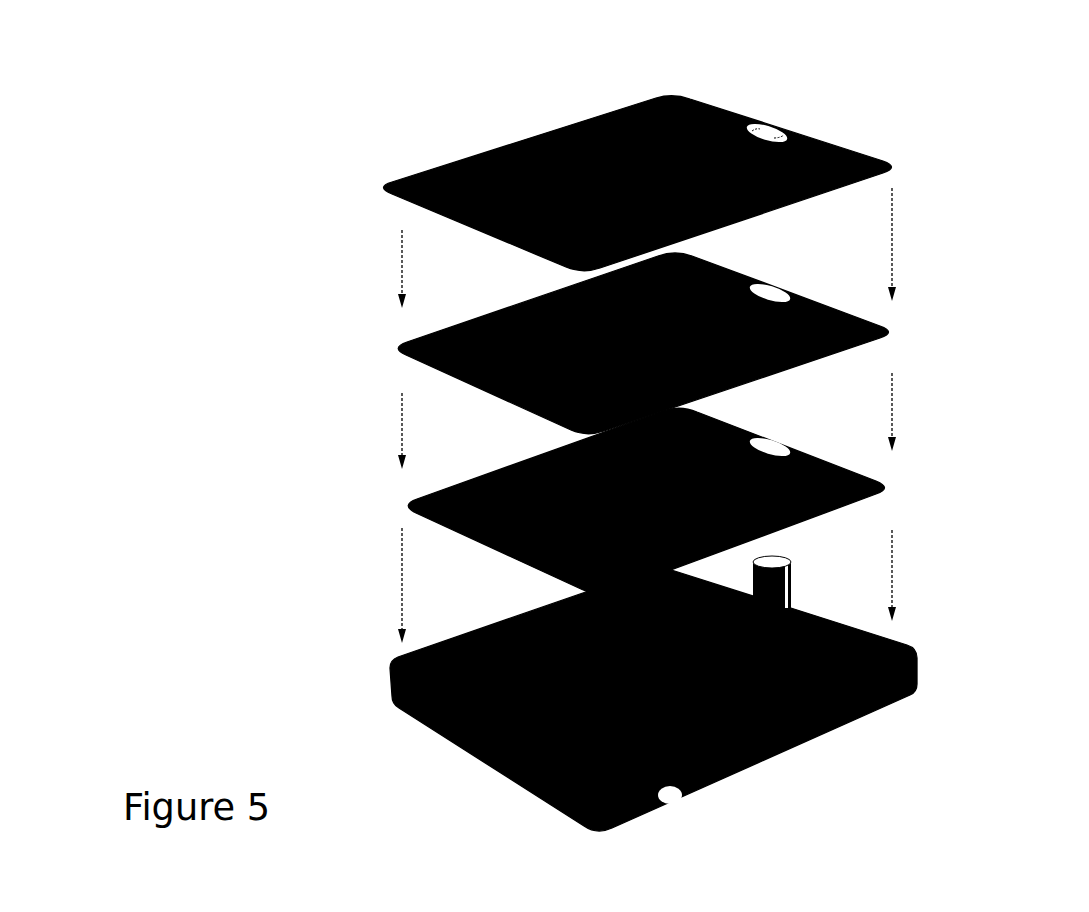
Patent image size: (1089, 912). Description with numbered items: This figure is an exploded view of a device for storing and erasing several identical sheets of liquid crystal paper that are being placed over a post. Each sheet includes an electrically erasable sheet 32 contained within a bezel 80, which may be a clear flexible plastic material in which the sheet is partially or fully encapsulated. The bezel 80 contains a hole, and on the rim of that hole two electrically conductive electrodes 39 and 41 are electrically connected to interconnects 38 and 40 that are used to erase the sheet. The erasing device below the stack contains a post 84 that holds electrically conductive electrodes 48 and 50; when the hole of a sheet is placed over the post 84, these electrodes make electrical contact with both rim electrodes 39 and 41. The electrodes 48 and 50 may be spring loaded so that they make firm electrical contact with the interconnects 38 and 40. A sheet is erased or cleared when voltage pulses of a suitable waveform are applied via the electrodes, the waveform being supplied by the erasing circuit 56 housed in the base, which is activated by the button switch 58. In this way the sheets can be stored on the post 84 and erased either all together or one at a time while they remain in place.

The electrically erasable sheet 32 is at (574, 138).
The bezel 80 is at (699, 110).
The interconnect 38 is at (738, 124).
The electrically conductive electrode 39 is at (753, 121).
The electrically conductive electrode 41 is at (788, 124).
The interconnect 40 is at (803, 139).
The electrically conductive electrode 48 is at (758, 558).
The post 84 is at (778, 566).
The electrically conductive electrode 50 is at (817, 590).
The erasing circuit 56 is at (890, 683).
The button switch 58 is at (675, 802).